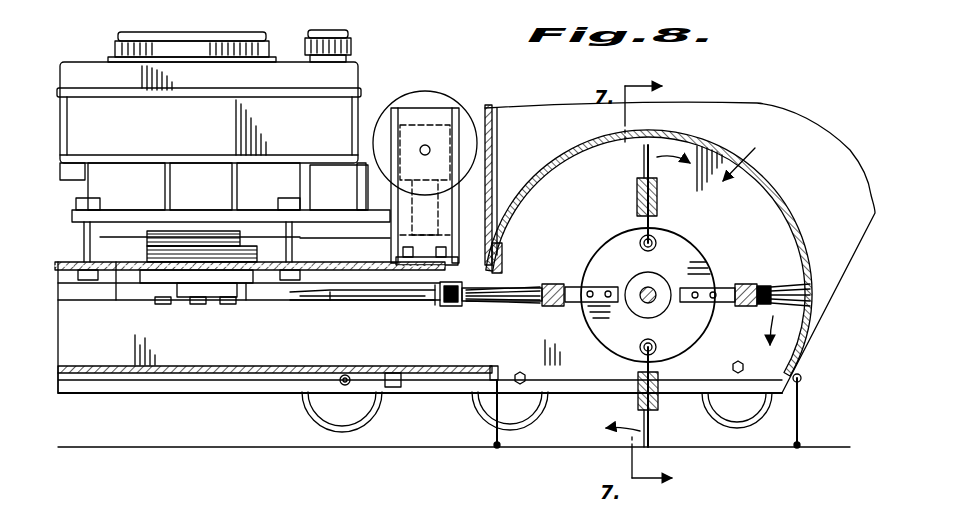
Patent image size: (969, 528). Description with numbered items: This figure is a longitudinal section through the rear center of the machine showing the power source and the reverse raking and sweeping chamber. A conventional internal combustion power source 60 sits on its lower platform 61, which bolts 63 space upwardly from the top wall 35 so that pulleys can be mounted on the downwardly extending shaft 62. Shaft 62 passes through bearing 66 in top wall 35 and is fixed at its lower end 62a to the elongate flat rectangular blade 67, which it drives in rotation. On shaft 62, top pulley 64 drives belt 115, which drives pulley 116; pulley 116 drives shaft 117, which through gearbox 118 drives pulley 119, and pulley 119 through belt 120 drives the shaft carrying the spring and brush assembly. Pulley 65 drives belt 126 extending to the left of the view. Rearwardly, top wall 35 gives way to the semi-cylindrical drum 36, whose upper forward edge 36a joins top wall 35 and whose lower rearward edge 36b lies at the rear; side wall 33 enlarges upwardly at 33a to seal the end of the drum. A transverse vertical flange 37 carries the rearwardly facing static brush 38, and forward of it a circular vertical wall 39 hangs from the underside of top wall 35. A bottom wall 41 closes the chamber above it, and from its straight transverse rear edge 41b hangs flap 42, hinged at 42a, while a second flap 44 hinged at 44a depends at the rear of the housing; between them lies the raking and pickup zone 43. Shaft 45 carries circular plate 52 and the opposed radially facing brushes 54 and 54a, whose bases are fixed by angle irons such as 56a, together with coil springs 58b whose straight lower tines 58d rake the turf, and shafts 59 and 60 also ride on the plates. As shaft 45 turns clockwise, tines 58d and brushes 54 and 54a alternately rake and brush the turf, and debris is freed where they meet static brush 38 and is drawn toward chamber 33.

The power source 60 is at (641, 245).
The lower platform 61 is at (148, 218).
The downwardly extending shaft 62 is at (190, 228).
The lower end of shaft 62a is at (196, 298).
The bolts 63 is at (80, 232).
The top pulley 64 is at (148, 236).
The pulley 65 is at (250, 290).
The bearing 66 is at (180, 291).
The blade 67 is at (60, 298).
The top wall 35 is at (60, 262).
The rear side wall 33 is at (75, 350).
The enlarged side wall portion 33a is at (565, 166).
The drum 36 is at (690, 139).
The upper forward edge 36a is at (519, 275).
The lower rearward edge 36b is at (774, 402).
The transverse vertical flange 37 is at (414, 299).
The brush 38 is at (456, 312).
The circular vertical wall 39 is at (384, 300).
The bottom wall 41 is at (180, 370).
The straight transverse rear edge 41b is at (493, 366).
The depending flap 42 is at (494, 430).
The flap hinge 42a is at (460, 382).
The raking chamber 43 is at (746, 154).
The second depending flap 44 is at (800, 428).
The flap hinge 44a is at (801, 381).
The shaft 45 is at (652, 290).
The circular plate 52 is at (620, 352).
The brush 54 is at (782, 288).
The brush 54a is at (528, 290).
The angle iron 56a is at (574, 305).
The coil spring 58b is at (658, 204).
The lower tine 58d is at (646, 162).
The shaft 59 is at (652, 344).
The belt 115 is at (255, 240).
The pulley 116 is at (385, 254).
The shaft 117 is at (342, 187).
The gearbox 118 is at (425, 118).
The pulley 119 is at (412, 108).
The belt 120 is at (487, 110).
The belt 126 is at (116, 262).